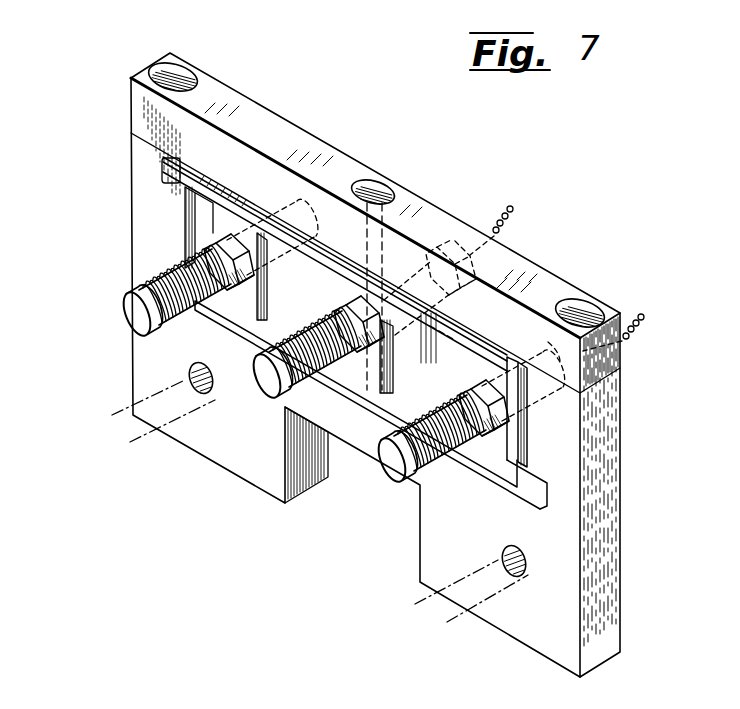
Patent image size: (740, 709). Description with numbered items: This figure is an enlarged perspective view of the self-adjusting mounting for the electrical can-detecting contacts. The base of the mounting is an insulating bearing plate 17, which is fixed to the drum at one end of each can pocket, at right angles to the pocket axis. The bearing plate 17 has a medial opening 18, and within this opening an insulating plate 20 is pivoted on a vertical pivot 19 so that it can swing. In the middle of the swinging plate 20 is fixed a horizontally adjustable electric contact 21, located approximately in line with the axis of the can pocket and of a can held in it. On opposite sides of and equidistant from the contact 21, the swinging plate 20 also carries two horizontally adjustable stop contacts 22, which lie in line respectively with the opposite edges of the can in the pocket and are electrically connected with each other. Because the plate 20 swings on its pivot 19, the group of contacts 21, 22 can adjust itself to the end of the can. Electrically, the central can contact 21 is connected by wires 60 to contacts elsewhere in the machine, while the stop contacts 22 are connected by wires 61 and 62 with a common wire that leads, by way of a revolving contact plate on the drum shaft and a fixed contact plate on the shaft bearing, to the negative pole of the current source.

The insulating bearing plate 17 is at (567, 538).
The medial opening 18 is at (187, 226).
The vertical pivot 19 is at (398, 187).
The insulating plate 20 is at (283, 303).
The electric contact 21 is at (266, 380).
The stop contacts 22 is at (137, 312).
The wires 60 is at (513, 205).
The wire 61 is at (443, 333).
The wire 62 is at (645, 313).